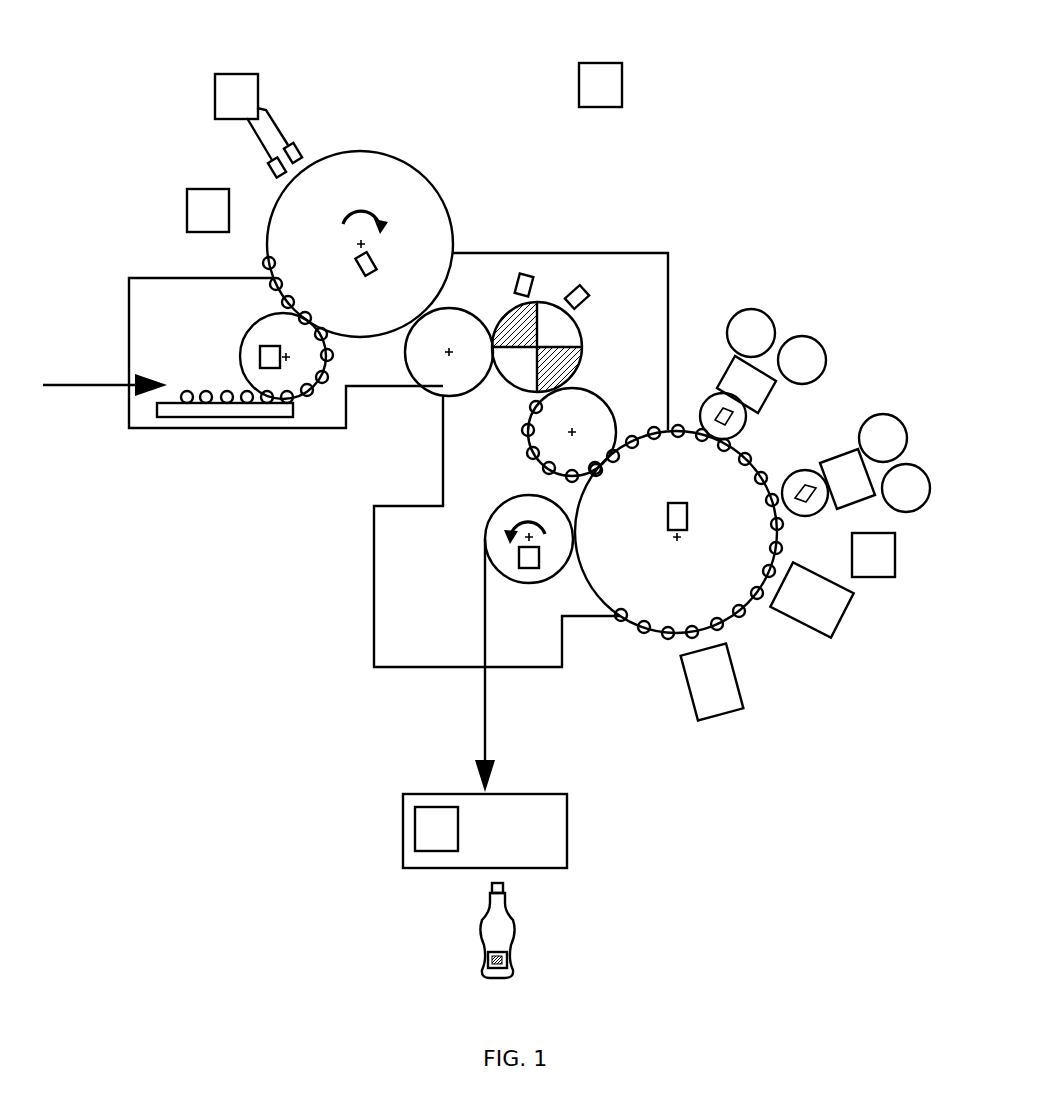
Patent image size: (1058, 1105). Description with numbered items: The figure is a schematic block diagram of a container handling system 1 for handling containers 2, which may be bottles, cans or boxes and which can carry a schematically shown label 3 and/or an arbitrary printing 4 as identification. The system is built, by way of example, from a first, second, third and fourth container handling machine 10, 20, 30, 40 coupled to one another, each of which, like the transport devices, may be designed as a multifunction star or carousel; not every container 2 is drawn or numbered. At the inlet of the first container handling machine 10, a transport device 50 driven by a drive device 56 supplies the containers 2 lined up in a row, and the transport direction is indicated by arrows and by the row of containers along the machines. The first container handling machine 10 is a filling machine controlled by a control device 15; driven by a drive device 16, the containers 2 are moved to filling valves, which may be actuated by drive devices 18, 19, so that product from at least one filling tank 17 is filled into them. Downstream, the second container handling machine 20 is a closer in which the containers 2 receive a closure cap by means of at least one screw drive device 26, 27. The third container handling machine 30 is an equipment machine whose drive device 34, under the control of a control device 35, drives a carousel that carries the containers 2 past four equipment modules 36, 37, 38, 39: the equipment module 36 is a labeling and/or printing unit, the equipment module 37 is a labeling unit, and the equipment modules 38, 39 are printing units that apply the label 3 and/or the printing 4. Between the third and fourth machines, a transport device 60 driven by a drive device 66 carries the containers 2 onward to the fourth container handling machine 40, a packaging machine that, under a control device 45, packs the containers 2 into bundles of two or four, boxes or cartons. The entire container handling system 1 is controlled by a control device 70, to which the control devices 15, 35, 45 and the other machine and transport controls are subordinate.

The container handling system 1 is at (795, 102).
The container 2 is at (187, 390).
The label 3 is at (509, 960).
The printing 4 is at (488, 960).
The first container handling machine 10 is at (421, 172).
The control device 15 is at (188, 207).
The drive device 16 is at (371, 275).
The filling tank 17 is at (235, 74).
The drive device 18 is at (266, 167).
The drive device 19 is at (296, 142).
The second container handling machine 20 is at (653, 251).
The screw drive device 26 is at (522, 275).
The screw drive device 27 is at (573, 286).
The third container handling machine 30 is at (853, 800).
The drive device 34 is at (687, 513).
The control device 35 is at (895, 555).
The equipment module 36 is at (778, 340).
The equipment module 37 is at (895, 463).
The equipment module 38 is at (852, 598).
The equipment module 39 is at (742, 712).
The fourth container handling machine 40 is at (567, 826).
The control device 45 is at (433, 807).
The transport device 50 is at (128, 342).
The drive device 56 is at (261, 346).
The transport device 60 is at (374, 596).
The drive device 66 is at (529, 568).
The control device 70 is at (600, 63).